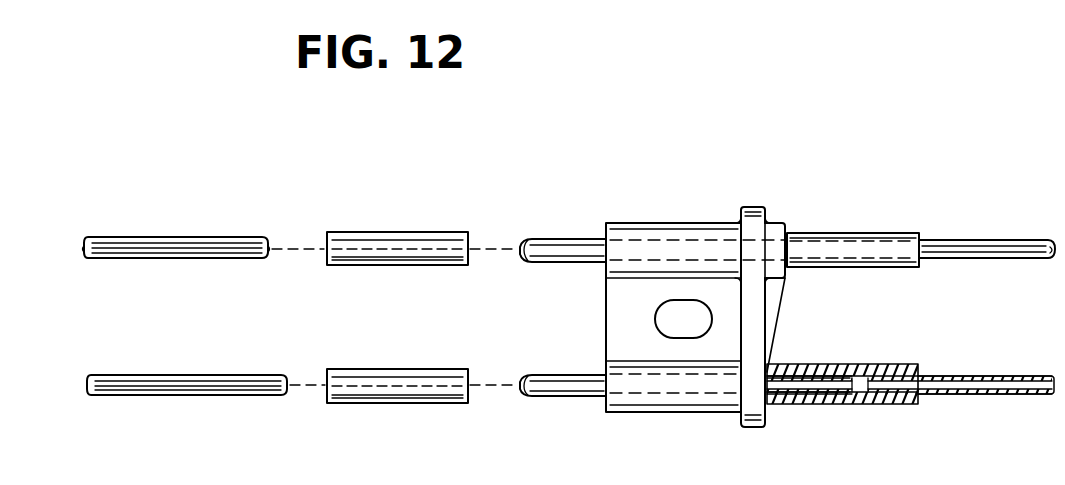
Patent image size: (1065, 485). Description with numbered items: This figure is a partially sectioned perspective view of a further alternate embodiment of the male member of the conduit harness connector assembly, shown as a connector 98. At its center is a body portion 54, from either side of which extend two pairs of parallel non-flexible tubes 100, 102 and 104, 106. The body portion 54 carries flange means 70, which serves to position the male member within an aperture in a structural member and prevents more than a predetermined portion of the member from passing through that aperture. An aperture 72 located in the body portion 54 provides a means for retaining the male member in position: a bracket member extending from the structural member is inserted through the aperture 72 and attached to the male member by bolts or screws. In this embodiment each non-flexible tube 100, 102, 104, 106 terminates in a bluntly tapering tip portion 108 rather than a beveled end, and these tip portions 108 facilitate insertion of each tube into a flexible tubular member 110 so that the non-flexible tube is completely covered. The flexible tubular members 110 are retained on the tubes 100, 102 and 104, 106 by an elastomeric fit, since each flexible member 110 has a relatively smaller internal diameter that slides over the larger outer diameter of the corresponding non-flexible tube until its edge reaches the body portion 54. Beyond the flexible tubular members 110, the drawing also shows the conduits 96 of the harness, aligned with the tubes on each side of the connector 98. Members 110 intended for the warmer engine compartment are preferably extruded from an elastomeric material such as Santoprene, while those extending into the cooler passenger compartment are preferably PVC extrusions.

The body portion 54 is at (612, 313).
The flange means 70 is at (757, 330).
The aperture 72 is at (668, 312).
The cable 96 is at (168, 238).
The connector 98 is at (690, 277).
The non-flexible tube 100 is at (588, 397).
The non-flexible tube 102 is at (832, 405).
The non-flexible tube 104 is at (572, 245).
The non-flexible tube 106 is at (843, 250).
The tip portion 108 is at (528, 244).
The flexible tubular member 110 is at (398, 232).